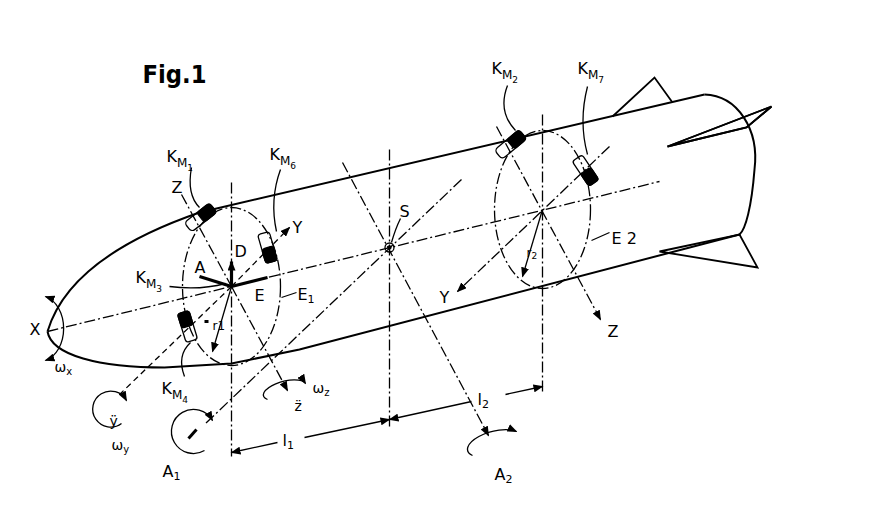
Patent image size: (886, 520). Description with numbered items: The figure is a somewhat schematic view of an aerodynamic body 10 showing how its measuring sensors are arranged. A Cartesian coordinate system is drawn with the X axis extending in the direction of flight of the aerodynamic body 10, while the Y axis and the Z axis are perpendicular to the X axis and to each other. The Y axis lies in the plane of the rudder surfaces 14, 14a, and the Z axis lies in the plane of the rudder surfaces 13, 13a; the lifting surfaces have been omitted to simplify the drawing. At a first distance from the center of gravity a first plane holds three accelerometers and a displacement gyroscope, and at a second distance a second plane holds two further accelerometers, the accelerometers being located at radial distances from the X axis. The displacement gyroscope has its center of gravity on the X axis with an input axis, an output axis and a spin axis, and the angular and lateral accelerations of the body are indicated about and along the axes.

The aerodynamic body 10 is at (378, 153).
The rudder surface 13 is at (664, 92).
The rudder surface 13a is at (729, 258).
The rudder surface 14 is at (755, 108).
The rudder surface 14a is at (720, 127).